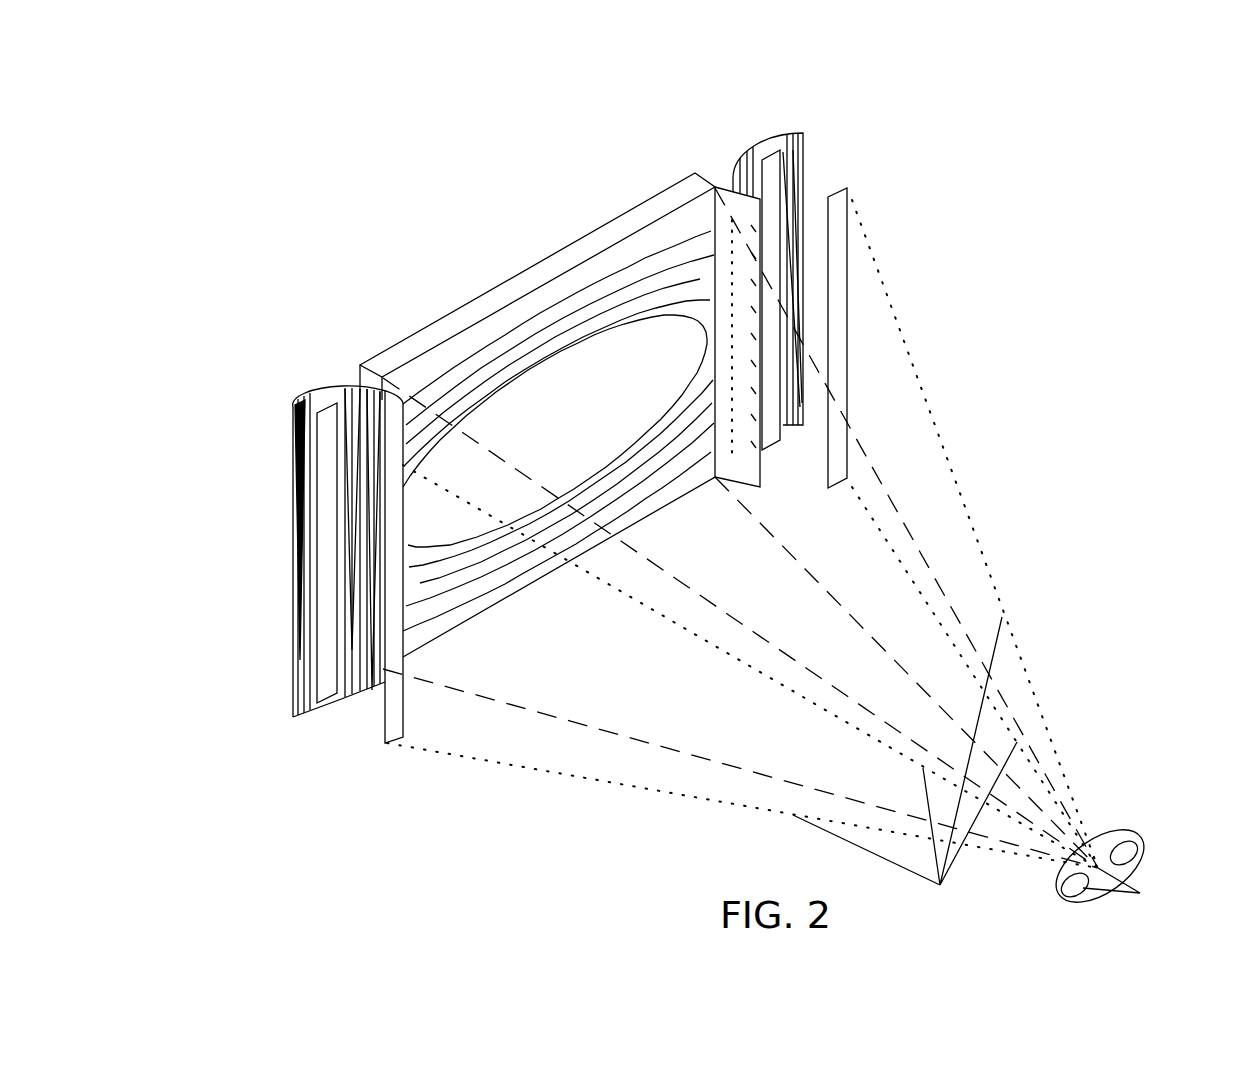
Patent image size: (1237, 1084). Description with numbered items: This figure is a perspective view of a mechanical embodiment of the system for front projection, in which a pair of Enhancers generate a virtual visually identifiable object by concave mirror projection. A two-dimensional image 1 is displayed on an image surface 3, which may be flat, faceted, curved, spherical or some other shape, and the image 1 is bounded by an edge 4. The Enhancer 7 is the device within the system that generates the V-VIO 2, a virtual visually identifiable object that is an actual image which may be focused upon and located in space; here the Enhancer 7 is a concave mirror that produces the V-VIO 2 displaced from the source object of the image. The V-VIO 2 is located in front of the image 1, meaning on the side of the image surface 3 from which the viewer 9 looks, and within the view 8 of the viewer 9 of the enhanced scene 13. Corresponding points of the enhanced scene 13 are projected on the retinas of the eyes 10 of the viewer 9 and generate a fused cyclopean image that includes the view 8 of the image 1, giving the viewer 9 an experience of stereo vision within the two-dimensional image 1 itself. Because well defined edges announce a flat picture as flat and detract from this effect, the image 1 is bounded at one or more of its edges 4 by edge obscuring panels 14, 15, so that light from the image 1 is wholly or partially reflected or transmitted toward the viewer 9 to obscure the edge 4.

The 2D image 1 is at (607, 383).
The V-VIO 2 is at (385, 728).
The image surface 3 is at (613, 347).
The edge 4 is at (714, 203).
The Enhancer 7 is at (290, 458).
The view 8 is at (933, 578).
The viewer 9 is at (1130, 837).
The eyes 10 is at (786, 558).
The enhanced scene 13 is at (905, 774).
The edge obscuring panel 14 is at (762, 472).
The edge obscuring panel 15 is at (737, 270).